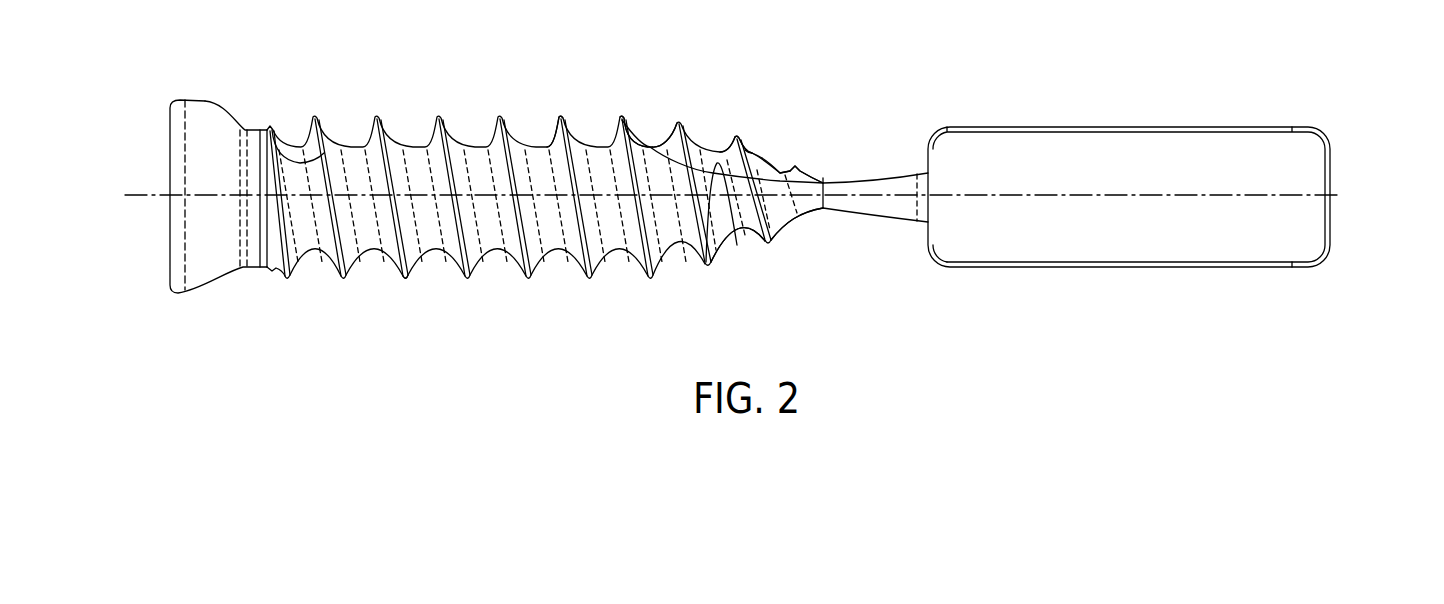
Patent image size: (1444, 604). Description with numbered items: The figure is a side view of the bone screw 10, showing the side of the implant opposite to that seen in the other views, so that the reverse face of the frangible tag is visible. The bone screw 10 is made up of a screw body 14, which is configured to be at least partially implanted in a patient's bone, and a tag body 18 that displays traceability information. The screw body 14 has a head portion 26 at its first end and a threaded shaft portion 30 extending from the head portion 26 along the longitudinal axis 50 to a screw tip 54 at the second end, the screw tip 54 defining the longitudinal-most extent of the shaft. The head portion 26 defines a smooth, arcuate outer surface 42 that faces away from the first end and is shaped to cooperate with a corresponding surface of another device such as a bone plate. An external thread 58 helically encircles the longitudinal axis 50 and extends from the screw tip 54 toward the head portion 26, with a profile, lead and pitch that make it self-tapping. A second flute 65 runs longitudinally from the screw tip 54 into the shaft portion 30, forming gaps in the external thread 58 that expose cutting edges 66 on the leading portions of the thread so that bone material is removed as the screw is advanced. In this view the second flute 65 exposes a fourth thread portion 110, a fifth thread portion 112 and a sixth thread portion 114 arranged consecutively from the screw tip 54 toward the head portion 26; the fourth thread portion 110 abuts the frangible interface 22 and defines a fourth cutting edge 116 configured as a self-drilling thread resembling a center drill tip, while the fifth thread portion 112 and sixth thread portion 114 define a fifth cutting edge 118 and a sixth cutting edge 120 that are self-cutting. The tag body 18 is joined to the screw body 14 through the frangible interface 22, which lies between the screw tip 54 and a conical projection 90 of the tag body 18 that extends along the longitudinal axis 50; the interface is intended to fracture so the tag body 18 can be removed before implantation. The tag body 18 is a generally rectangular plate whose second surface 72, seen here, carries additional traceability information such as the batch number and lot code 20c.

The bone screw 10 is at (156, 38).
The screw body 14 is at (491, 80).
The tag body 18 is at (756, 191).
The lot code 20c is at (1210, 245).
The frangible interface 22 is at (825, 208).
The head portion 26 is at (182, 297).
The threaded shaft portion 30 is at (562, 258).
The outer surface 42 is at (215, 104).
The longitudinal axis 50 is at (1338, 196).
The screw tip 54 is at (823, 172).
The external thread 58 is at (567, 117).
The second flute 65 is at (727, 233).
The cutting edges 66 is at (759, 156).
The second surface 72 is at (982, 248).
The projection 90 is at (893, 173).
The fourth thread portion 110 is at (783, 162).
The fifth thread portion 112 is at (724, 134).
The sixth thread portion 114 is at (663, 125).
The fourth cutting edge 116 is at (820, 178).
The fifth cutting edge 118 is at (750, 150).
The sixth cutting edge 120 is at (683, 127).